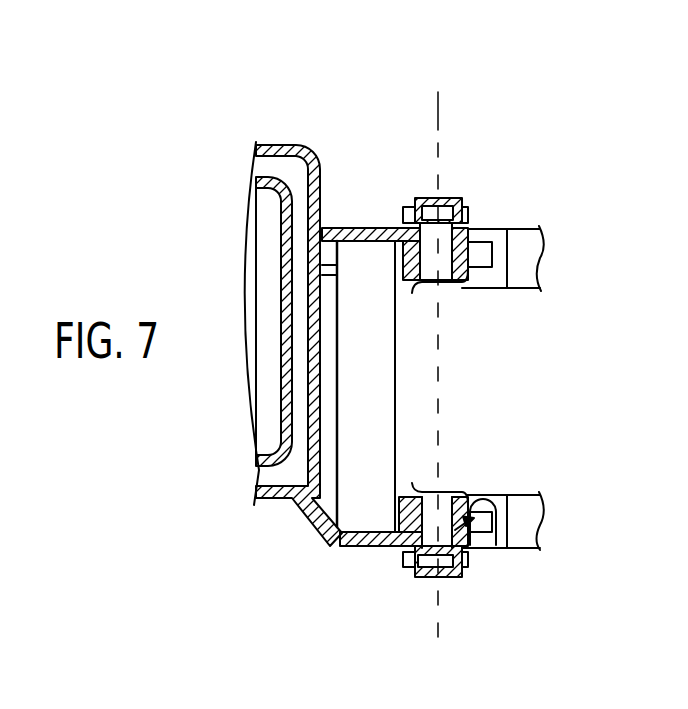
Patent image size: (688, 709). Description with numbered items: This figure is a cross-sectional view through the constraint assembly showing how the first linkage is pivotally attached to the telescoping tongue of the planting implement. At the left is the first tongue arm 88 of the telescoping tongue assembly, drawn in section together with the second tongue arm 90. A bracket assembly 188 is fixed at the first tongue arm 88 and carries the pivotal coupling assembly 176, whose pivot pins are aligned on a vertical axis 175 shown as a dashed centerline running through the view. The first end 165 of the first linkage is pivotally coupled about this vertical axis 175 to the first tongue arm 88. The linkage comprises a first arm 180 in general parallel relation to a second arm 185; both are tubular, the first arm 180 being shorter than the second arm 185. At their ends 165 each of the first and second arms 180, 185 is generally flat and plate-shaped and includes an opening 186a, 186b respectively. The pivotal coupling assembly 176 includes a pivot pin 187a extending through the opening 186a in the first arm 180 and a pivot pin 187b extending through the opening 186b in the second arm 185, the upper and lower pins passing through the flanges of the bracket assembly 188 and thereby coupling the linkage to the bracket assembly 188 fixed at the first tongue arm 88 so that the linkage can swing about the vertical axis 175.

The first tongue arm 88 is at (272, 142).
The second tongue arm 90 is at (313, 152).
The bracket assembly 188 is at (351, 216).
The vertical axis 175 is at (441, 122).
The first end 165 is at (456, 615).
The pivotal coupling assembly 176 is at (478, 184).
The opening 186a is at (455, 284).
The pivot pin 187a is at (406, 280).
The first arm 180 is at (512, 226).
The opening 186b is at (450, 492).
The pivot pin 187b is at (517, 548).
The second arm 185 is at (520, 487).